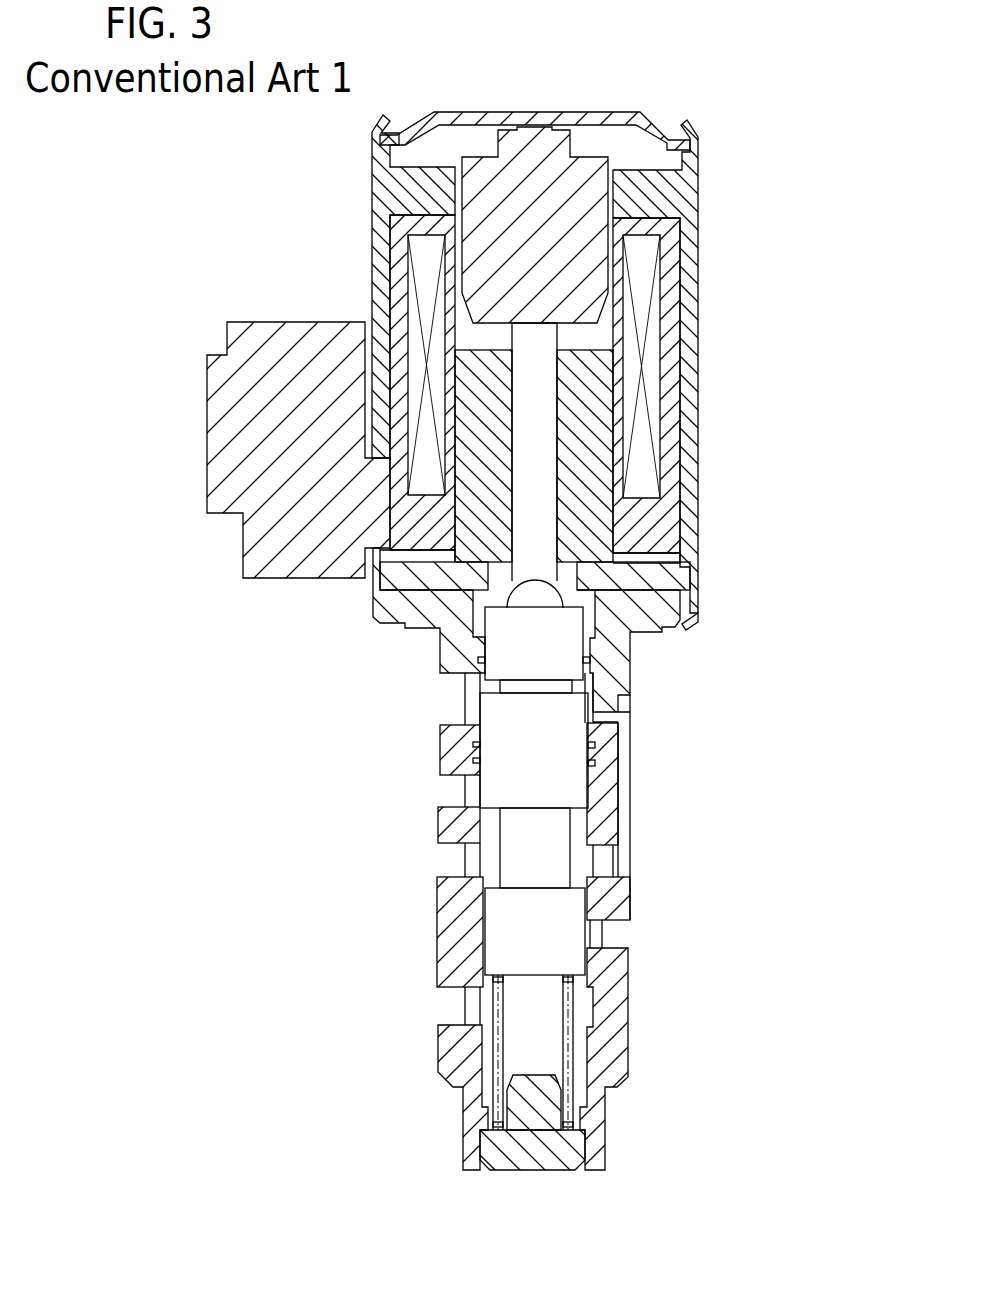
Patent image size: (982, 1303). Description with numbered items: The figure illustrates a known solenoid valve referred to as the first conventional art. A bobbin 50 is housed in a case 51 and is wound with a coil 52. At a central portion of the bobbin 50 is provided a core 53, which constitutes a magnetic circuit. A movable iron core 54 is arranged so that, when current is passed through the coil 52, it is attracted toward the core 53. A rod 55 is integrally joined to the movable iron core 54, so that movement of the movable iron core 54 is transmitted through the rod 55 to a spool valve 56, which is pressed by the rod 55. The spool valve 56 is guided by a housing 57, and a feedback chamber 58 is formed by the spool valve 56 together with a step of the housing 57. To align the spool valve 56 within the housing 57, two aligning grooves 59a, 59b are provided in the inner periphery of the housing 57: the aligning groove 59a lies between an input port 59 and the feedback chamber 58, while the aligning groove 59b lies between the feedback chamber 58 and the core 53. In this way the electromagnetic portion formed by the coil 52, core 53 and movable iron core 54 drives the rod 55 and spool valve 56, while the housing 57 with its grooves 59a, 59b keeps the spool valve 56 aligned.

The bobbin 50 is at (280, 320).
The case 51 is at (372, 190).
The coil 52 is at (690, 297).
The core 53 is at (588, 503).
The movable iron core 54 is at (598, 212).
The rod 55 is at (542, 436).
The spool valve 56 is at (575, 943).
The housing 57 is at (448, 1043).
The feedback chamber 58 is at (590, 680).
The input port 59 is at (468, 793).
The aligning groove 59a is at (595, 770).
The aligning groove 59b is at (592, 661).